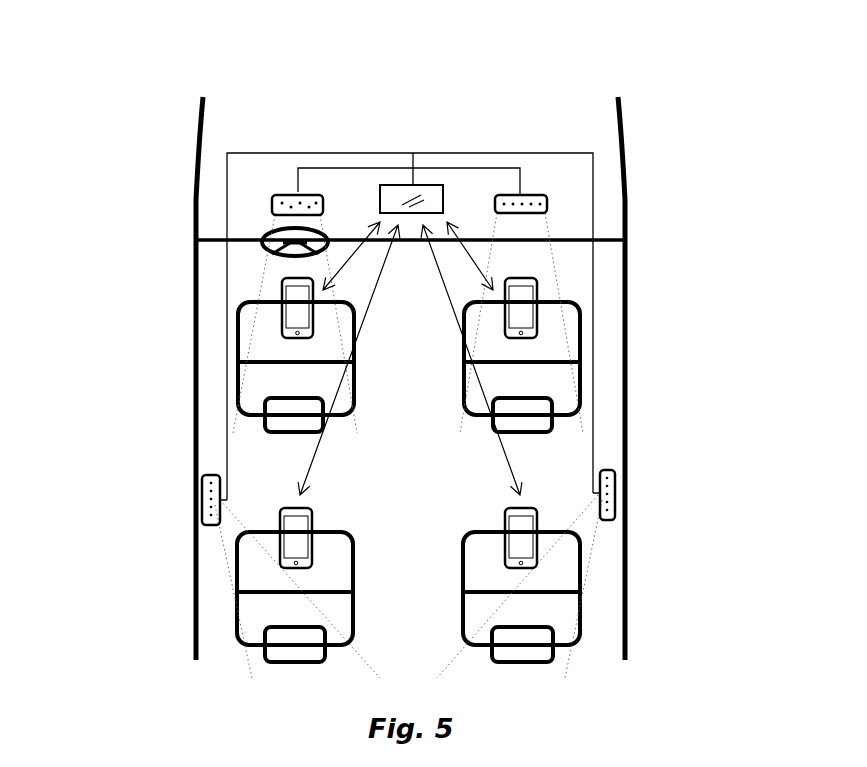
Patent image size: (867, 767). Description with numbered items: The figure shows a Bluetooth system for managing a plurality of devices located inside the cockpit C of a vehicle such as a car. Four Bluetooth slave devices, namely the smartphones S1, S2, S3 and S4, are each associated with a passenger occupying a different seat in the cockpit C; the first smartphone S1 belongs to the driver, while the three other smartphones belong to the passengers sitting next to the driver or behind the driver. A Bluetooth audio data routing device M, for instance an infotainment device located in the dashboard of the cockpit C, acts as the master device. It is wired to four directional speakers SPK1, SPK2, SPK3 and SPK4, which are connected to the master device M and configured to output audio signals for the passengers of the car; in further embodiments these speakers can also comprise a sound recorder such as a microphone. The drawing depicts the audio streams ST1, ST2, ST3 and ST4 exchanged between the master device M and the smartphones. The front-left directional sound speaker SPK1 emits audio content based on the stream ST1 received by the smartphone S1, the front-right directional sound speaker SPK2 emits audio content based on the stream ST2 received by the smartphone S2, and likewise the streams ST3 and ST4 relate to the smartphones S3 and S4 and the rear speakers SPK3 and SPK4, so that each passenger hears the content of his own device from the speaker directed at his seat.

The cockpit C is at (140, 104).
The Bluetooth audio data routing device M is at (437, 188).
The front-left directional sound speaker SPK1 is at (285, 200).
The front-right directional sound speaker SPK2 is at (533, 200).
The directional sound speaker SPK3 is at (212, 500).
The directional sound speaker SPK4 is at (612, 502).
The stream ST1 is at (355, 262).
The stream ST2 is at (468, 258).
The stream ST3 is at (307, 465).
The stream ST4 is at (507, 463).
The first smartphone S1 is at (300, 325).
The smartphone S2 is at (520, 318).
The smartphone S3 is at (297, 543).
The smartphone S4 is at (523, 548).